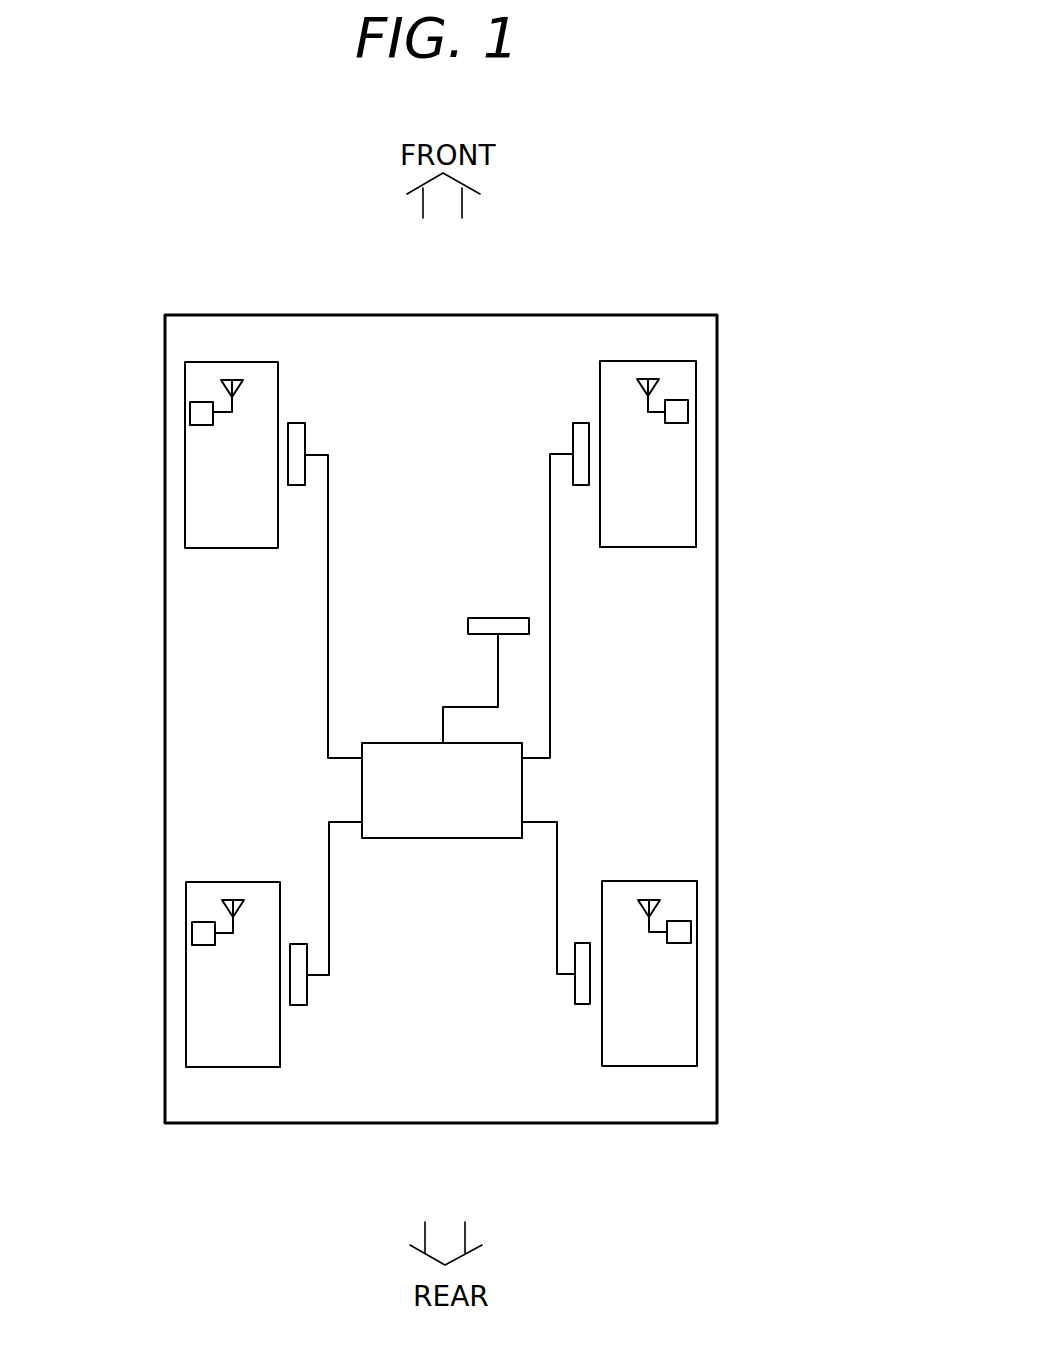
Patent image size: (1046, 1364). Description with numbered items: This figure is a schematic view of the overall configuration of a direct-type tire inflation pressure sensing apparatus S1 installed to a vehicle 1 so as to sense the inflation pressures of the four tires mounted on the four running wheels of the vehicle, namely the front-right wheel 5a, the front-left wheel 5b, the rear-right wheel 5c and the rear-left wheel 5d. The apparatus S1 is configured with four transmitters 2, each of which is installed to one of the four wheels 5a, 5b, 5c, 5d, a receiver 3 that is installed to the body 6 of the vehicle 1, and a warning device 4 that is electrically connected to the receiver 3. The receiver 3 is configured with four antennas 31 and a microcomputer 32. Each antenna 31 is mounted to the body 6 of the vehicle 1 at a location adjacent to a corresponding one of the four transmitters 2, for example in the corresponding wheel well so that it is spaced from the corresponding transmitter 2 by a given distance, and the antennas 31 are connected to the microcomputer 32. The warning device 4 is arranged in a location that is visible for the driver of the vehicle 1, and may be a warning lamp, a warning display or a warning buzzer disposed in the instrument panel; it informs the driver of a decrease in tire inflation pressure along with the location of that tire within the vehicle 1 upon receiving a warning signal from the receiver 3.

The tire inflation pressure sensing apparatus S1 is at (750, 264).
The vehicle 1 is at (730, 640).
The transmitter 2 is at (190, 402).
The receiver 3 is at (403, 846).
The warning device 4 is at (500, 618).
The front-right wheel 5a is at (696, 493).
The front-left wheel 5b is at (185, 491).
The rear-right wheel 5c is at (697, 1012).
The rear-left wheel 5d is at (186, 1008).
The body 6 is at (717, 585).
The antenna 31 is at (298, 423).
The microcomputer 32 is at (500, 838).